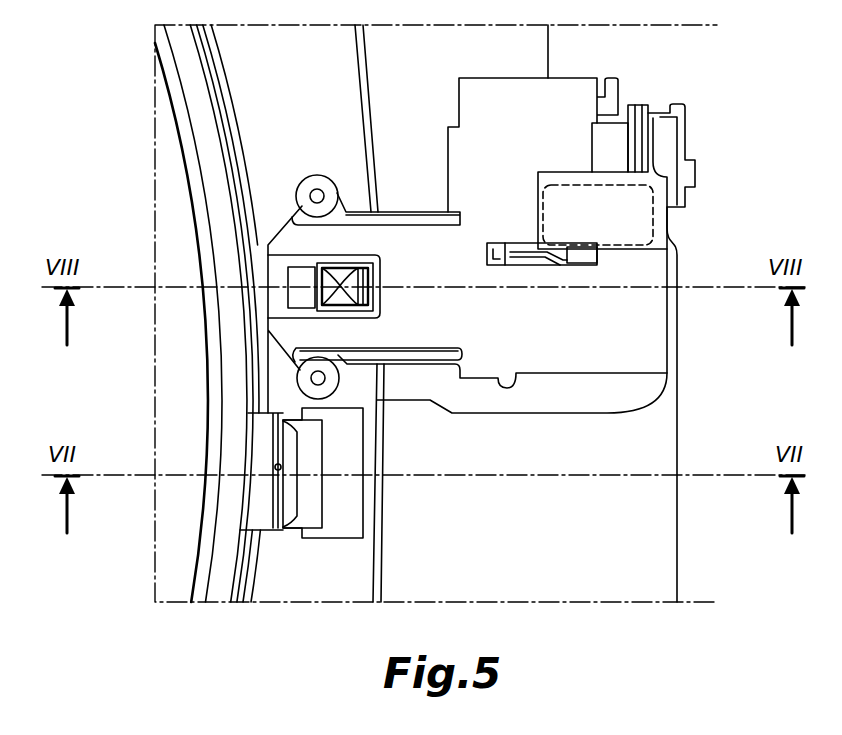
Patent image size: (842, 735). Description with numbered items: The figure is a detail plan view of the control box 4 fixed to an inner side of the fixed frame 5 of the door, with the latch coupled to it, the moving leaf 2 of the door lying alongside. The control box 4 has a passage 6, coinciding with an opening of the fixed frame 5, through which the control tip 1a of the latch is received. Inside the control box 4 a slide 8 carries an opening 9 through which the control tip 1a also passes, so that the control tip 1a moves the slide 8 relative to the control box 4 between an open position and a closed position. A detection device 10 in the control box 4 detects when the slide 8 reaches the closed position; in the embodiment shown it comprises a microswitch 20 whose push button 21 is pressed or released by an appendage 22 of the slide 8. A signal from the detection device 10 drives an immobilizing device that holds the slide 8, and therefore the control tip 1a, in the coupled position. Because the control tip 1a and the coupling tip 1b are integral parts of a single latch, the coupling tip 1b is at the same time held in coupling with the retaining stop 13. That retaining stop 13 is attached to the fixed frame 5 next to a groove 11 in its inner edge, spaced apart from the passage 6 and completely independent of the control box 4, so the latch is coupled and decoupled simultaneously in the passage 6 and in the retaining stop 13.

The control tip 1a is at (360, 296).
The coupling tip 1b is at (312, 457).
The moving leaf 2 is at (195, 420).
The control box 4 is at (424, 192).
The fixed frame 5 is at (270, 103).
The passage 6 is at (295, 262).
The slide 8 is at (296, 292).
The opening 9 is at (371, 281).
The detection device 10 is at (525, 228).
The groove 11 is at (240, 530).
The retaining stop 13 is at (338, 530).
The microswitch 20 is at (585, 200).
The push button 21 is at (583, 257).
The appendage 22 is at (558, 260).